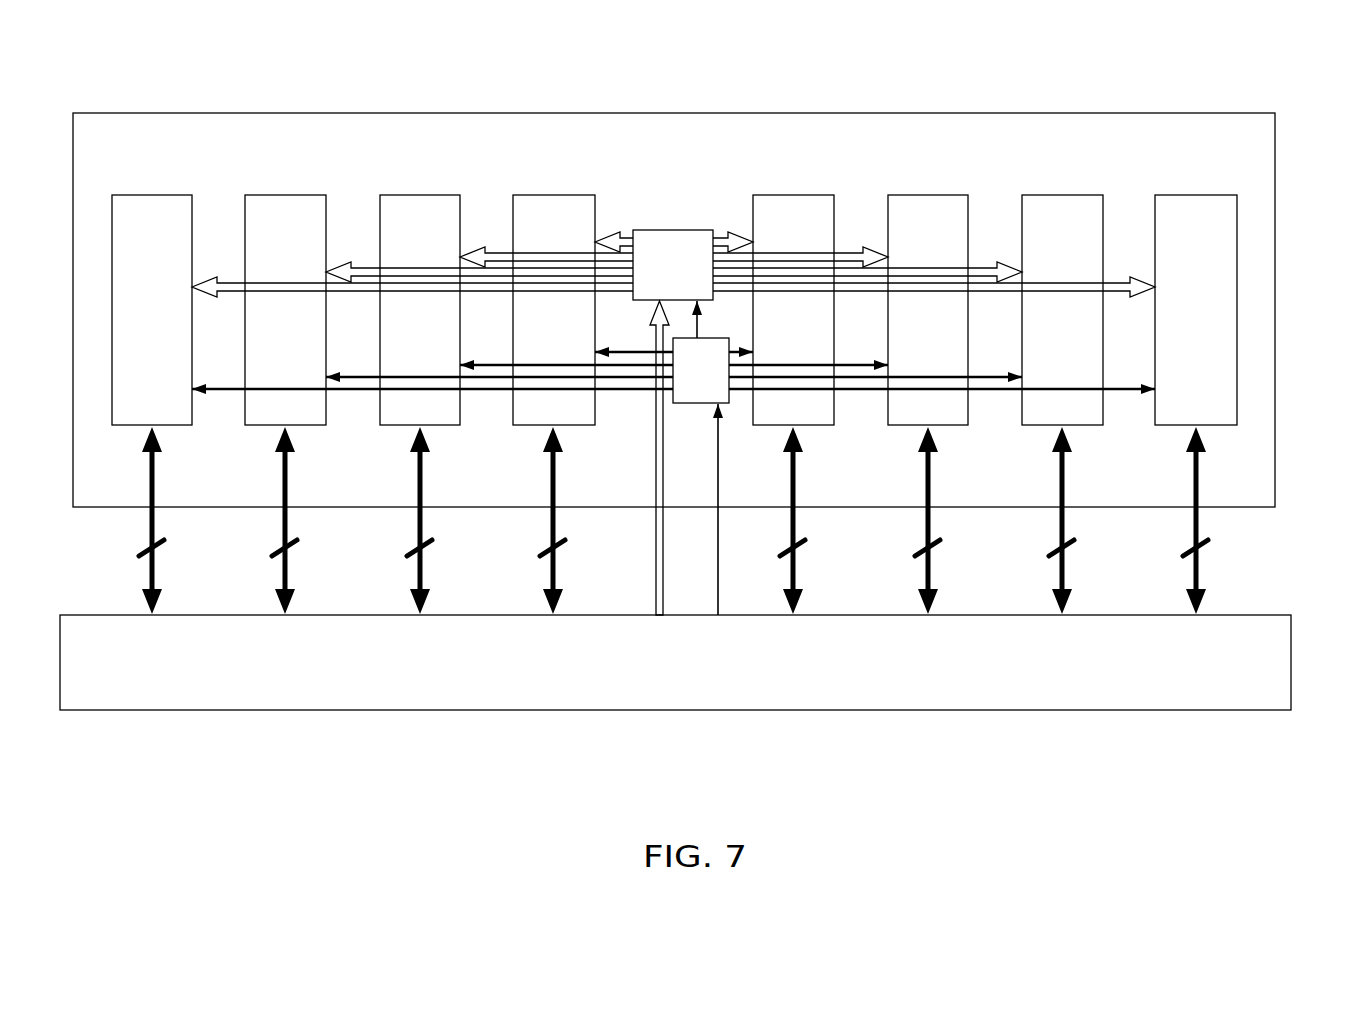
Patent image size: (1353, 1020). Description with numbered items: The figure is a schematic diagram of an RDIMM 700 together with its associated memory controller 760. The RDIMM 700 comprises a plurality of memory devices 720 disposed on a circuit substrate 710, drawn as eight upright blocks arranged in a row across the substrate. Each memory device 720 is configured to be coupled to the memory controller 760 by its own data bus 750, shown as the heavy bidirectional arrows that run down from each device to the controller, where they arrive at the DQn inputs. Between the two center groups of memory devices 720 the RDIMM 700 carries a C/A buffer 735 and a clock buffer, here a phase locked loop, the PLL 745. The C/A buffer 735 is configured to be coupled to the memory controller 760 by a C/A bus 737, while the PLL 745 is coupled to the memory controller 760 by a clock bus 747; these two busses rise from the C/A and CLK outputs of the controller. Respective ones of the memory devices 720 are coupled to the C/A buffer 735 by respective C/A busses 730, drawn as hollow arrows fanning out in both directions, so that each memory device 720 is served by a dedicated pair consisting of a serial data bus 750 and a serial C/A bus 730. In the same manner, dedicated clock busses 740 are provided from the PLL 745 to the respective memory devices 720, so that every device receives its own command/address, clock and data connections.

The RDIMM 700 is at (1178, 50).
The circuit substrate 710 is at (1276, 163).
The memory devices 720 is at (150, 195).
The C/A busses 730 is at (622, 238).
The C/A buffer 735 is at (672, 230).
The C/A bus 737 is at (656, 545).
The clock busses 740 is at (618, 391).
The phase locked loop (PLL) 745 is at (690, 405).
The clock bus 747 is at (719, 480).
The data busses 750 is at (550, 530).
The memory controller 760 is at (1291, 664).